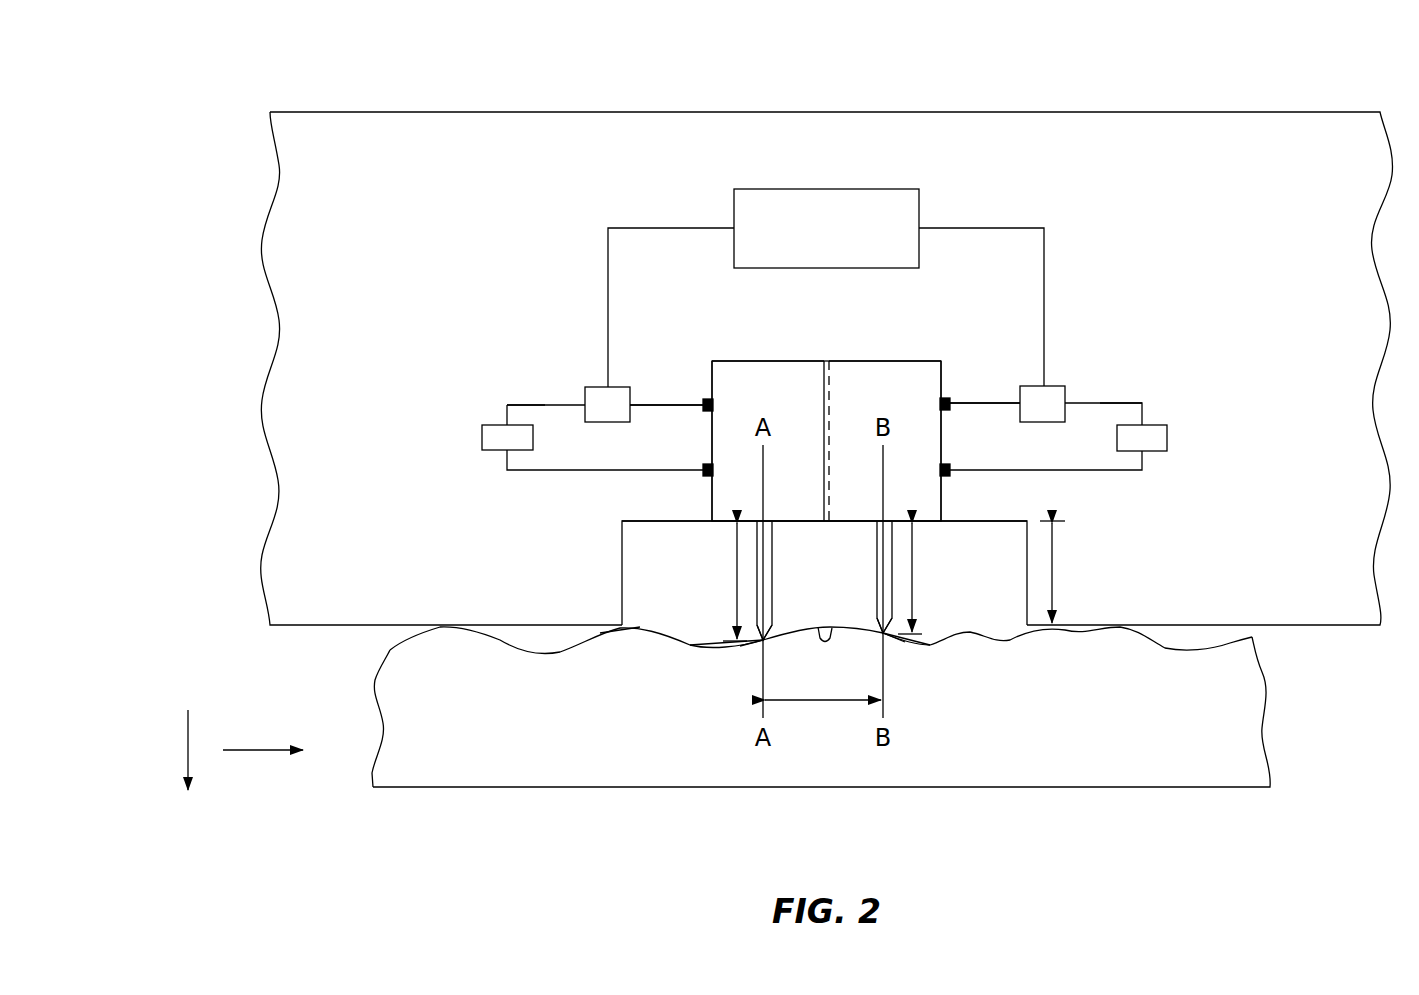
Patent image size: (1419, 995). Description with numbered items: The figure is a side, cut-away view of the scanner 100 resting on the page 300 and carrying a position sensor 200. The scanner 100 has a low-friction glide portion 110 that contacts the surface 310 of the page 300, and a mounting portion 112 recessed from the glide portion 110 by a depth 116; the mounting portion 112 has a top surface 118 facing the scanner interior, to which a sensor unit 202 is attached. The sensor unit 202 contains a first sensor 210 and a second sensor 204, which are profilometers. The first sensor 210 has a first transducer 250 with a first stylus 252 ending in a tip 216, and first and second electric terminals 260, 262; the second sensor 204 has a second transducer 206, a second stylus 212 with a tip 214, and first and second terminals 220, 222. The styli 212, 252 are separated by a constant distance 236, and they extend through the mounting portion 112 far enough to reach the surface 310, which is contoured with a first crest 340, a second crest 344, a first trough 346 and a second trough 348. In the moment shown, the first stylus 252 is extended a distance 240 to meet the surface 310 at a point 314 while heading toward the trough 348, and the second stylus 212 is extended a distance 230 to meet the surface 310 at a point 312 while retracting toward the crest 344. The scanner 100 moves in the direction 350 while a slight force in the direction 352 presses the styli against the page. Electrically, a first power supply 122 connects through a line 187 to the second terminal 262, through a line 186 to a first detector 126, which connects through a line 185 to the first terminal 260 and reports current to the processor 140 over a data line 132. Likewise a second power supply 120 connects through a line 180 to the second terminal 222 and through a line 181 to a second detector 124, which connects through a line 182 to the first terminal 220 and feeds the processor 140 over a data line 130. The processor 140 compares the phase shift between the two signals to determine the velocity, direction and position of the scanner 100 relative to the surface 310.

The scanner 100 is at (1224, 80).
The glide portion 110 is at (1340, 628).
The mounting portion 112 is at (662, 524).
The depth 116 is at (1062, 570).
The top surface 118 is at (1013, 521).
The second power supply 120 is at (482, 437).
The first power supply 122 is at (1167, 438).
The second detector 124 is at (590, 387).
The first detector 126 is at (1055, 386).
The data line 130 is at (608, 264).
The data line 132 is at (1044, 264).
The processor 140 is at (838, 187).
The line 180 is at (557, 473).
The line 181 is at (507, 410).
The line 182 is at (662, 404).
The line 185 is at (985, 403).
The line 186 is at (1142, 410).
The line 187 is at (1090, 472).
The position sensor 200 is at (953, 177).
The sensor unit 202 is at (825, 361).
The second sensor 204 is at (709, 438).
The second transducer 206 is at (750, 361).
The first sensor 210 is at (944, 438).
The second stylus 212 is at (777, 540).
The tip 214 is at (785, 638).
The tip 216 is at (860, 637).
The first terminal 220 is at (705, 398).
The second terminal 222 is at (705, 476).
The distance 230 is at (735, 578).
The distance 236 is at (824, 705).
The distance 240 is at (913, 578).
The first transducer 250 is at (904, 361).
The first stylus 252 is at (868, 572).
The first electric terminal 260 is at (948, 398).
The second electric terminal 262 is at (950, 476).
The page 300 is at (1070, 805).
The surface 310 is at (1072, 645).
The point 312 is at (757, 645).
The point 314 is at (888, 638).
The first crest 340 is at (625, 633).
The second crest 344 is at (819, 628).
The first trough 346 is at (725, 648).
The second trough 348 is at (890, 637).
The direction 350 is at (265, 751).
The direction 352 is at (188, 750).